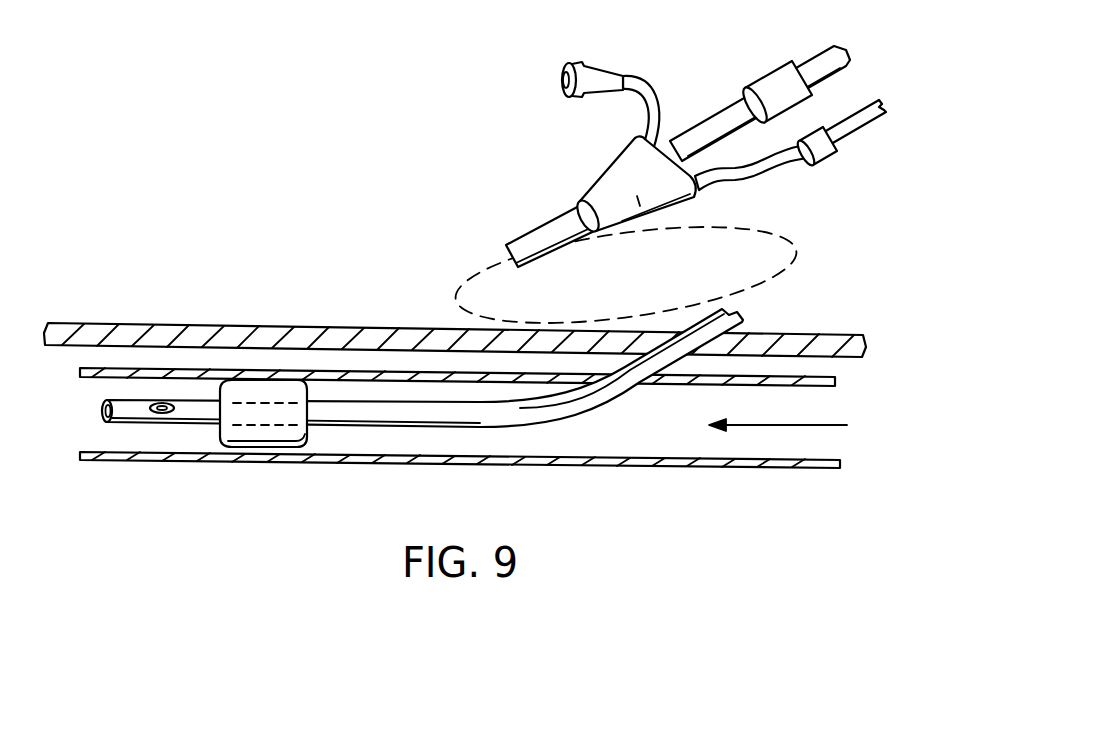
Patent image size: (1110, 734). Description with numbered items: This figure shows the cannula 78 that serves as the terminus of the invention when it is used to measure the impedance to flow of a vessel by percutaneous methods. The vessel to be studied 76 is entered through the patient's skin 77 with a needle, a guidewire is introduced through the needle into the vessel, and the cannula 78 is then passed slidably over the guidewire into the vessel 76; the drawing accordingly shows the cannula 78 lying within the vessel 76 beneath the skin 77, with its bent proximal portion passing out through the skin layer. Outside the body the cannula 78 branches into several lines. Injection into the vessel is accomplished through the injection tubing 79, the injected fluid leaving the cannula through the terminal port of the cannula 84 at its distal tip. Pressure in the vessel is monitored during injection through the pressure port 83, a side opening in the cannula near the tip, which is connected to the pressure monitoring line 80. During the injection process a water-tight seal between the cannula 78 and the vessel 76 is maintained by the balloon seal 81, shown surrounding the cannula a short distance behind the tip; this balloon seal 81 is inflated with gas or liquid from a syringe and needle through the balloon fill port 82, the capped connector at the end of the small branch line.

The vessel 76 is at (773, 467).
The patient's skin 77 is at (820, 338).
The cannula 78 is at (514, 262).
The injection tubing 79 is at (800, 70).
The pressure monitoring line 80 is at (858, 128).
The balloon seal 81 is at (310, 433).
The balloon fill port 82 is at (578, 100).
The pressure port 83 is at (172, 404).
The terminal port of the cannula 84 is at (101, 410).